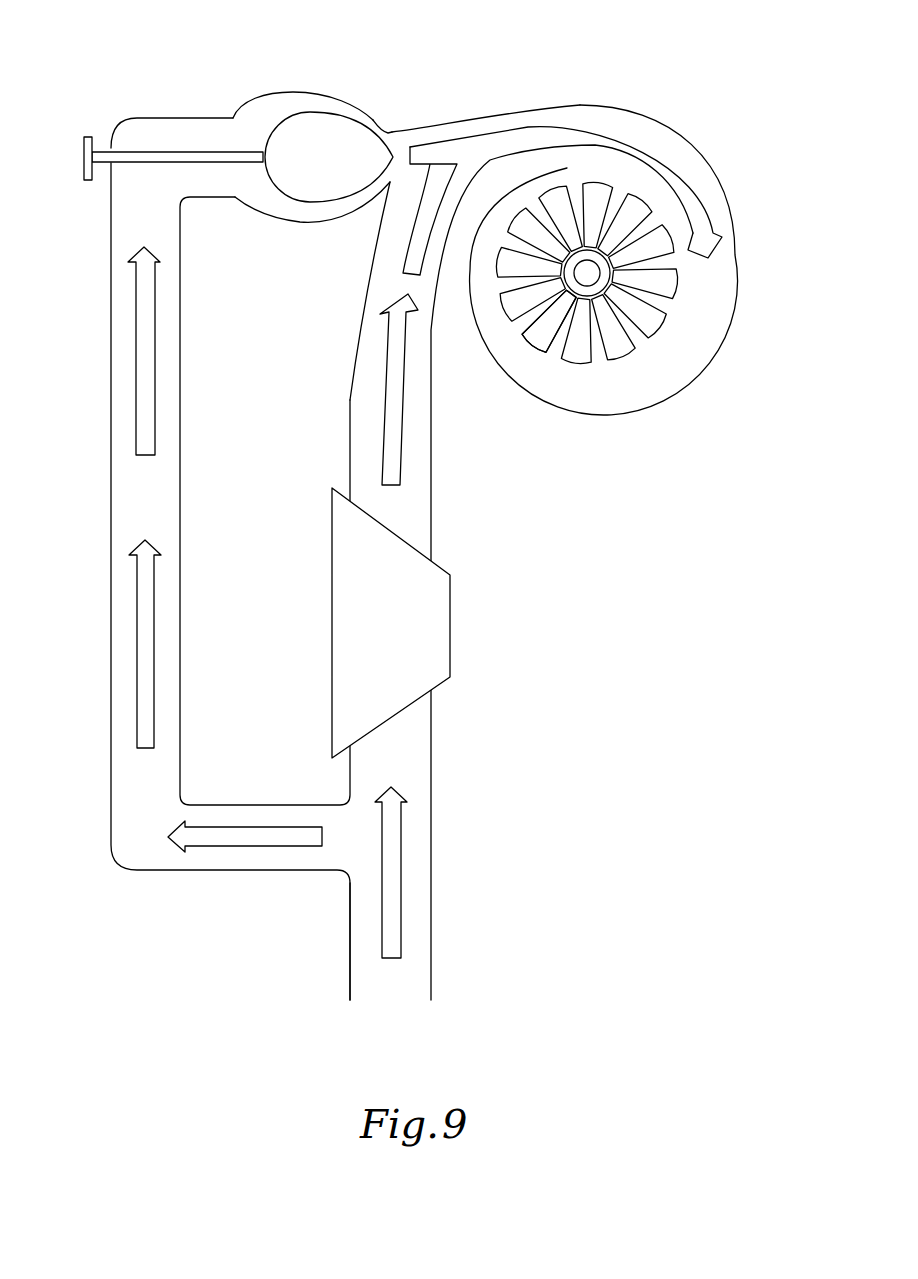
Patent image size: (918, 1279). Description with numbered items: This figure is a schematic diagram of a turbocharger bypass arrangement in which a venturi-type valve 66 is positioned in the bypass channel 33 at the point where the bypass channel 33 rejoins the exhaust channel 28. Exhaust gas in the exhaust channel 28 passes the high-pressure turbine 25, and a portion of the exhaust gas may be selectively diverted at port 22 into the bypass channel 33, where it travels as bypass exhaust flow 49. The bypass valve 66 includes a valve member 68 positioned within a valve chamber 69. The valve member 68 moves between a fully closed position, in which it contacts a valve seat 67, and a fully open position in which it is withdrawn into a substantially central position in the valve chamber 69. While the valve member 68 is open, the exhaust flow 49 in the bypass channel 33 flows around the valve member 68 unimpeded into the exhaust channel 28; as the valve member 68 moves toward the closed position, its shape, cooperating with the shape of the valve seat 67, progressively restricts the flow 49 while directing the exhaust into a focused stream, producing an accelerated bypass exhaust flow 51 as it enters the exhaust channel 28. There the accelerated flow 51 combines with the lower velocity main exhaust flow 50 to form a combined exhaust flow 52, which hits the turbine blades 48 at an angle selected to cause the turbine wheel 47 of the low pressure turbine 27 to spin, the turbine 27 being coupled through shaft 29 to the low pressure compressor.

The port 22 is at (345, 847).
The high-pressure turbine 25 is at (399, 637).
The low pressure turbine 27 is at (740, 263).
The exhaust channel 28 is at (423, 335).
The shaft 29 is at (587, 277).
The bypass channel 33 is at (122, 492).
The turbine wheel 47 is at (617, 350).
The turbine blades 48 is at (537, 343).
The bypass exhaust flow 49 is at (145, 410).
The main exhaust flow 50 is at (393, 352).
The accelerated bypass exhaust flow 51 is at (427, 153).
The combined exhaust flow 52 is at (507, 147).
The venturi-type valve 66 is at (250, 58).
The valve seat 67 is at (373, 118).
The valve member 68 is at (302, 125).
The valve chamber 69 is at (338, 105).